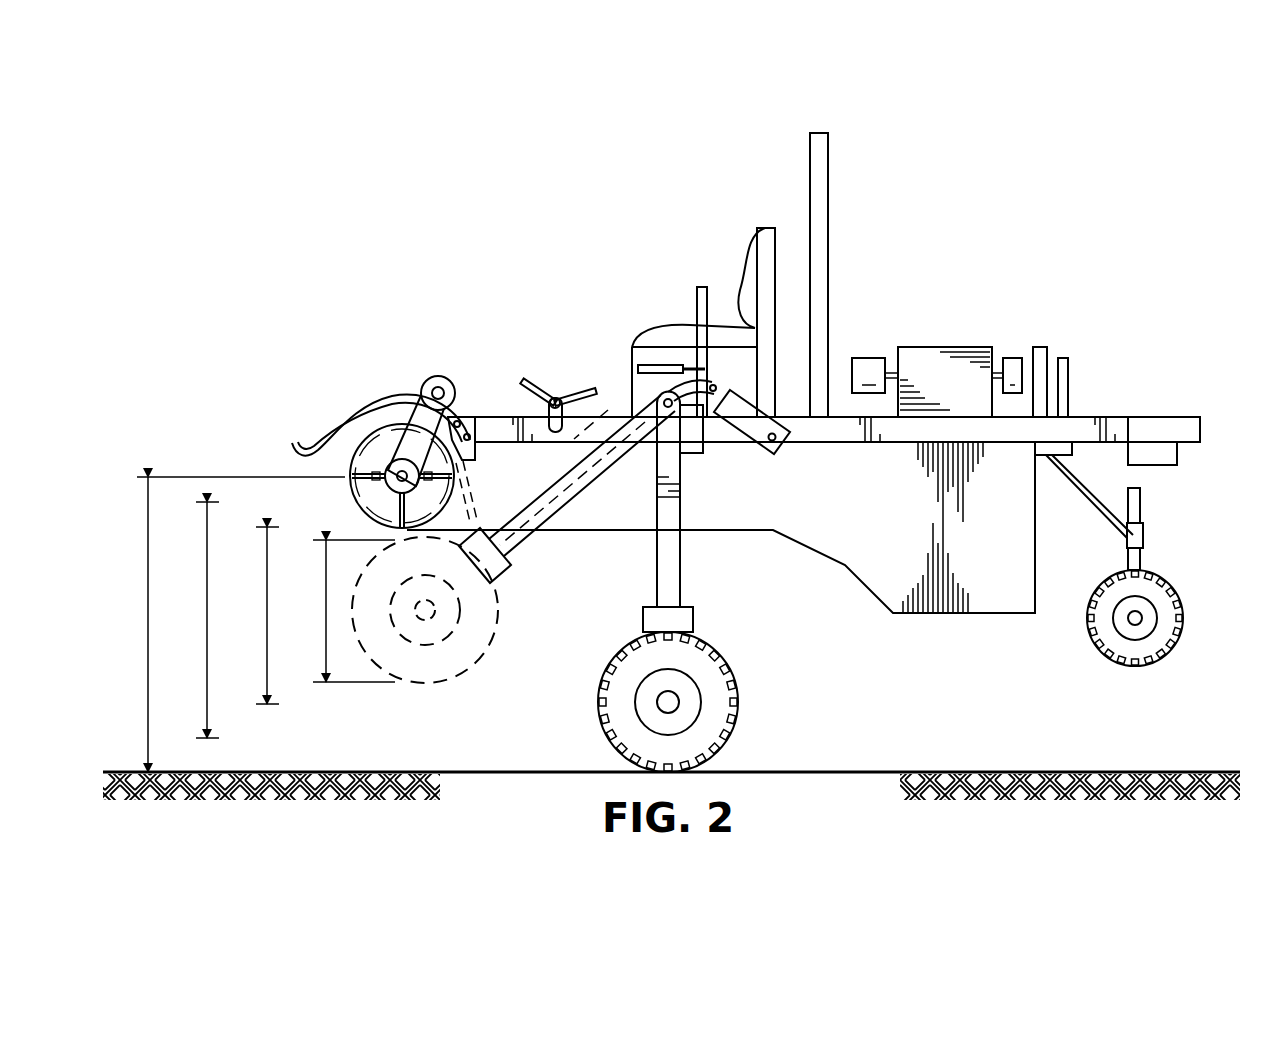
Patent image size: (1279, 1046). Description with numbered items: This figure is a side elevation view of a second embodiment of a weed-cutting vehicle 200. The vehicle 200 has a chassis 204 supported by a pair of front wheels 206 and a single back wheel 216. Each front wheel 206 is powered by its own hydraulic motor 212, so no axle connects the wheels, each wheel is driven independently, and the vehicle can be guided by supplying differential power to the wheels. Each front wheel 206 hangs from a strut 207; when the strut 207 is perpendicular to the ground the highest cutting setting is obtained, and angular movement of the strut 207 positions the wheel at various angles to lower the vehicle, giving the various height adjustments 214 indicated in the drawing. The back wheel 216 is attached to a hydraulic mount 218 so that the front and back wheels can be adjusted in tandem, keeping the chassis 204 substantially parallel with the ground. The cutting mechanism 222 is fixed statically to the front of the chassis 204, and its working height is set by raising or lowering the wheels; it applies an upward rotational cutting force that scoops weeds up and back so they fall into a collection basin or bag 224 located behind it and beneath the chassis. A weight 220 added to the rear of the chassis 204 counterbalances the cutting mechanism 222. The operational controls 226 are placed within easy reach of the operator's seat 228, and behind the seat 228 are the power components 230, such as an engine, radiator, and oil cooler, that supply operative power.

The vehicle 200 is at (918, 153).
The chassis 204 is at (498, 416).
The front wheel 206 is at (427, 684).
The strut 207 is at (680, 570).
The hydraulic motor 212 is at (643, 620).
The height adjustment 214 is at (204, 448).
The back wheel 216 is at (1135, 667).
The hydraulic mount 218 is at (1150, 536).
The weight 220 is at (1160, 424).
The cutting mechanism 222 is at (376, 430).
The collection basin or bag 224 is at (818, 507).
The operational controls 226 is at (654, 364).
The operator's seat 228 is at (763, 228).
The power components 230 is at (990, 320).